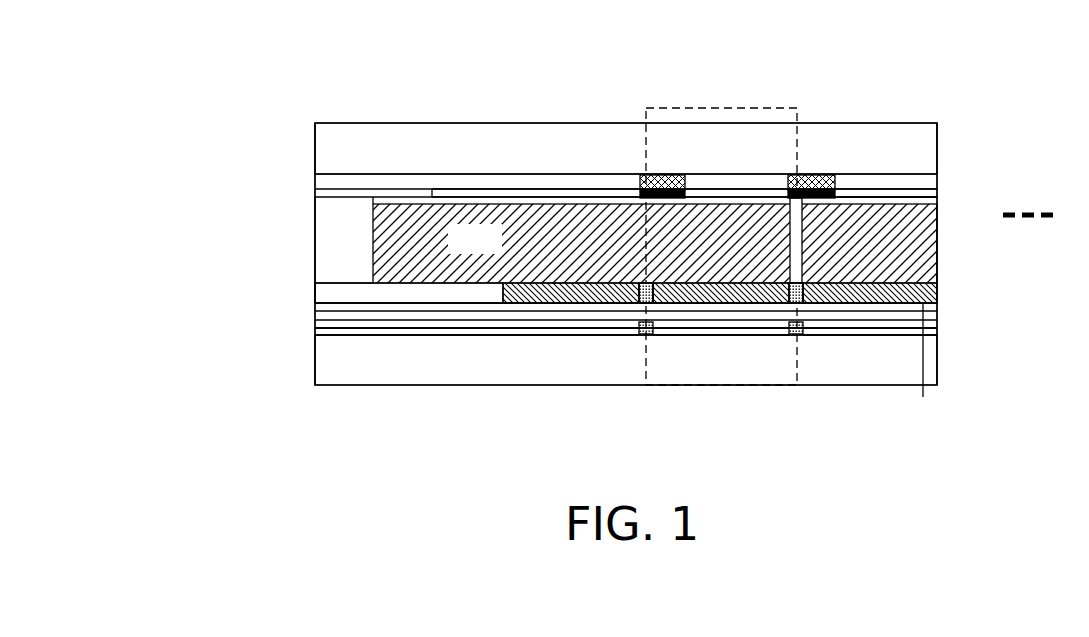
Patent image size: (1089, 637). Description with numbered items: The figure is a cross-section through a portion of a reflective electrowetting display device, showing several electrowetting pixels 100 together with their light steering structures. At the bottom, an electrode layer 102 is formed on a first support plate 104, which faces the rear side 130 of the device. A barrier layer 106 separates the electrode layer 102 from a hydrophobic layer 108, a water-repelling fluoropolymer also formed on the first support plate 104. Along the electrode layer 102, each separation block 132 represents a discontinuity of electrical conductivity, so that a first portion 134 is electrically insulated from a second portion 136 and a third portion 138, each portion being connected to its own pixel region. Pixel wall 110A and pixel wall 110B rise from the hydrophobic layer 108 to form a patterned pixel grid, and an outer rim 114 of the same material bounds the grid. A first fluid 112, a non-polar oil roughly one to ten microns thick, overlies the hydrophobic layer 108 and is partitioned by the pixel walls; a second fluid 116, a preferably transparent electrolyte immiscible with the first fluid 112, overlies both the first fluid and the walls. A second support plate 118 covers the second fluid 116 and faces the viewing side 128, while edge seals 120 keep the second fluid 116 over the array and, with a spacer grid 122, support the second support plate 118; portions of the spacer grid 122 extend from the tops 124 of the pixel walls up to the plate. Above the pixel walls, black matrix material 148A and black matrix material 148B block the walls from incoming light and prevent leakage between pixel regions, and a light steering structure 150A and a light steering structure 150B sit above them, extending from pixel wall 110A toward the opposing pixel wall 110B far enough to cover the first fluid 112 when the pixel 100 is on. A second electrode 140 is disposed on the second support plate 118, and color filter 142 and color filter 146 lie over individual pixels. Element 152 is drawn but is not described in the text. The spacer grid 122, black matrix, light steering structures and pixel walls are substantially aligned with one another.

The electrowetting pixel 100 is at (185, 75).
The electrode layer 102 is at (315, 330).
The first support plate 104 is at (401, 371).
The barrier layer 106 is at (315, 320).
The hydrophobic layer 108 is at (315, 307).
The pixel wall 110A is at (636, 300).
The pixel wall 110B is at (783, 300).
The first fluid 112 is at (925, 365).
The outer rim 114 is at (315, 292).
The second fluid 116 is at (495, 251).
The second support plate 118 is at (402, 158).
The edge seal 120 is at (363, 248).
The spacer grid 122 is at (805, 266).
The top of pixel wall 124 is at (640, 287).
The viewing side 128 is at (940, 78).
The rear side 130 is at (462, 445).
The separation block 132 is at (655, 330).
The first portion of electrode layer 134 is at (553, 337).
The second portion of electrode layer 136 is at (760, 337).
The third portion of electrode layer 138 is at (855, 337).
The second electrode 140 is at (433, 175).
The color filter 142 is at (455, 197).
The color filter 146 is at (872, 197).
The black matrix material 148A is at (640, 192).
The black matrix material 148B is at (813, 192).
The light steering structure 150A is at (653, 178).
The light steering structure 150B is at (793, 178).
The dielectric layer 152 is at (332, 175).